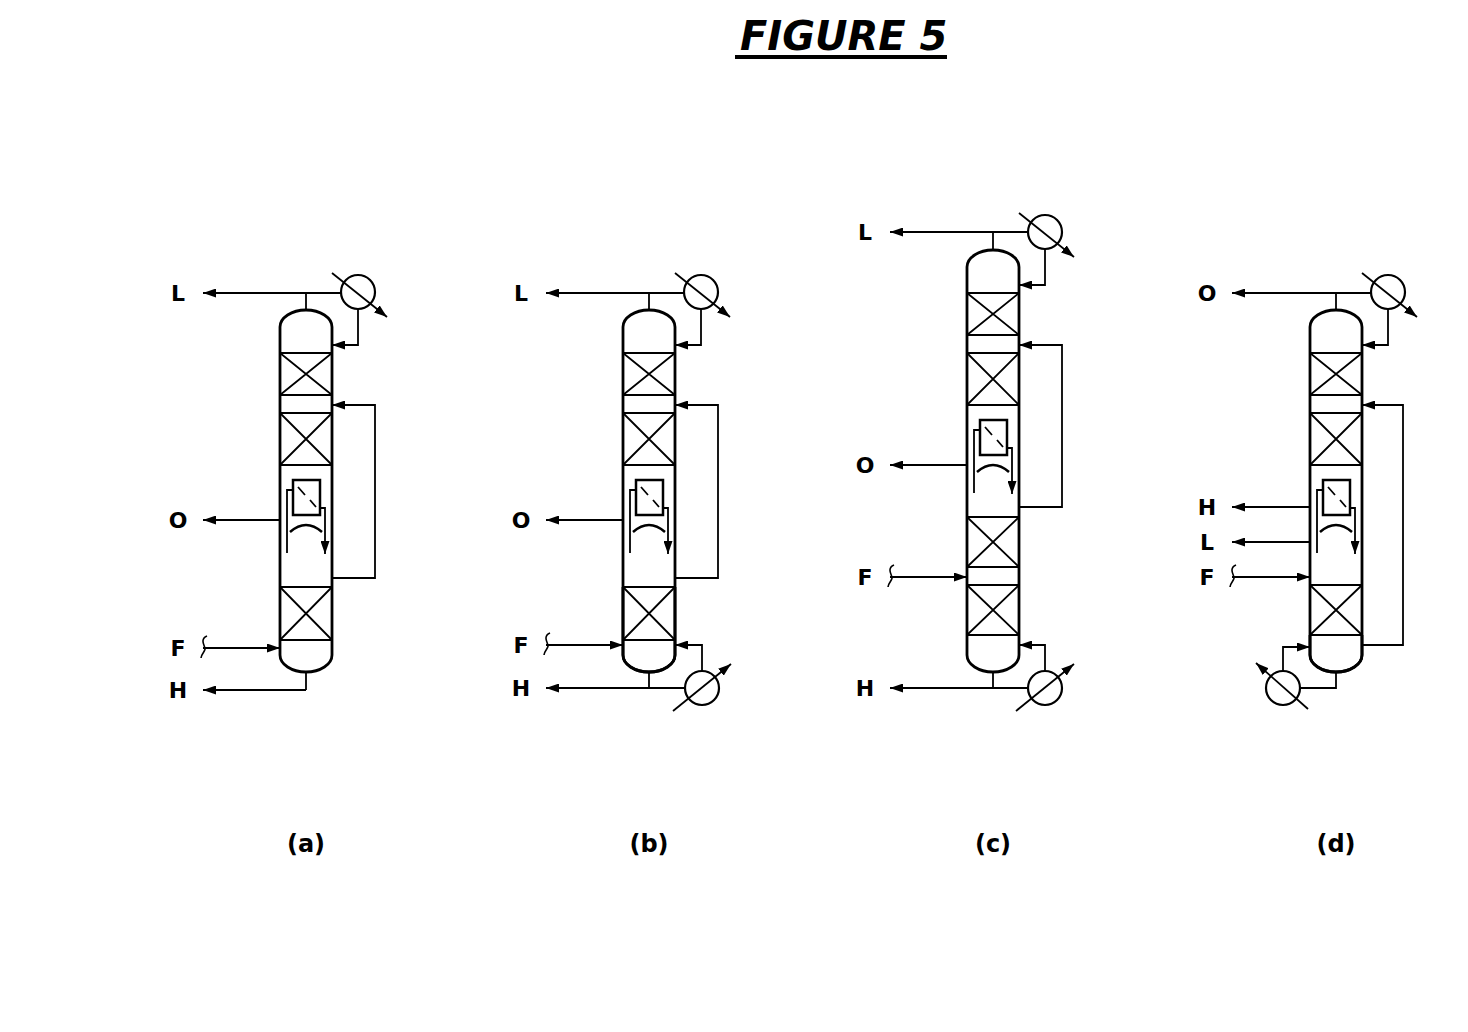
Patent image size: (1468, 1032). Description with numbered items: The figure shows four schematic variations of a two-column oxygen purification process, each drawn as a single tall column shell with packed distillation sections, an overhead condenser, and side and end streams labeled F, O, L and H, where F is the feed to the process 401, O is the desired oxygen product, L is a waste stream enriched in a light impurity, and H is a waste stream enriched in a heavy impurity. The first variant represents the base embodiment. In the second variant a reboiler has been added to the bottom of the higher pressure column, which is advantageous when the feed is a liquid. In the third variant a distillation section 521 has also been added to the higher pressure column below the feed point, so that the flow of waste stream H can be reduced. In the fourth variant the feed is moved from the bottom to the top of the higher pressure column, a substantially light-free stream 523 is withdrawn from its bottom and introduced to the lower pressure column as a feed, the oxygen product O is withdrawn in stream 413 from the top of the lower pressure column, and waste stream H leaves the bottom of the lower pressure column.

The distillation section 521 is at (1010, 620).
The feed stream 401 is at (258, 648).
The oxygen product stream 413 is at (1306, 292).
The substantially light-free stream 523 is at (1403, 547).